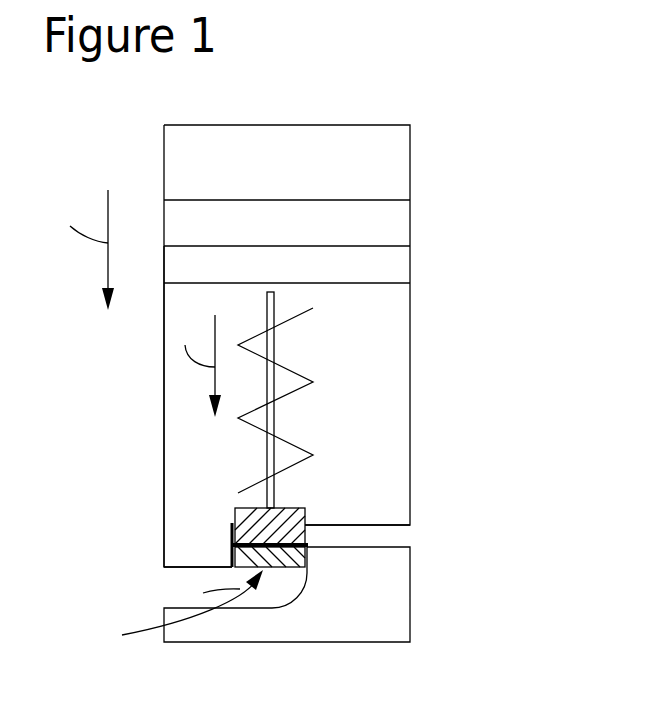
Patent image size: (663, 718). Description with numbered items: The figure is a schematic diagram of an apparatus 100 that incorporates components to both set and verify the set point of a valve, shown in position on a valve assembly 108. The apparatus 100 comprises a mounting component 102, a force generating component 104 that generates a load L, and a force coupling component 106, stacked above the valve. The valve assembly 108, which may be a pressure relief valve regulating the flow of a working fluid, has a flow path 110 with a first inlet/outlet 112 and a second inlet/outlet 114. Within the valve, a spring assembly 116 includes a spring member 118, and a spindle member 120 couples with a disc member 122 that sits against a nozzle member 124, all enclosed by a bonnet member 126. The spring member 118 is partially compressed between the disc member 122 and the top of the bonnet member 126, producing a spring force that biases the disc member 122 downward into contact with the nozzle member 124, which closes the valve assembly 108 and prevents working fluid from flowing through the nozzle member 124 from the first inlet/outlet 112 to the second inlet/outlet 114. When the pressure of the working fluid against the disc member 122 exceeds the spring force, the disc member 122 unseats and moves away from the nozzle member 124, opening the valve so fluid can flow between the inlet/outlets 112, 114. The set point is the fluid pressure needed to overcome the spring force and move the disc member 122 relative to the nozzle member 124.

The apparatus 100 is at (486, 206).
The mounting component 102 is at (307, 176).
The force generating component 104 is at (307, 236).
The force coupling component 106 is at (307, 274).
The valve assembly 108 is at (527, 285).
The flow path 110 is at (410, 654).
The first inlet/outlet 112 is at (145, 585).
The second inlet/outlet 114 is at (412, 534).
The spring assembly 116 is at (143, 481).
The spring member 118 is at (302, 370).
The spindle member 120 is at (273, 338).
The disc member 122 is at (303, 508).
The nozzle member 124 is at (307, 567).
The bonnet member 126 is at (410, 288).